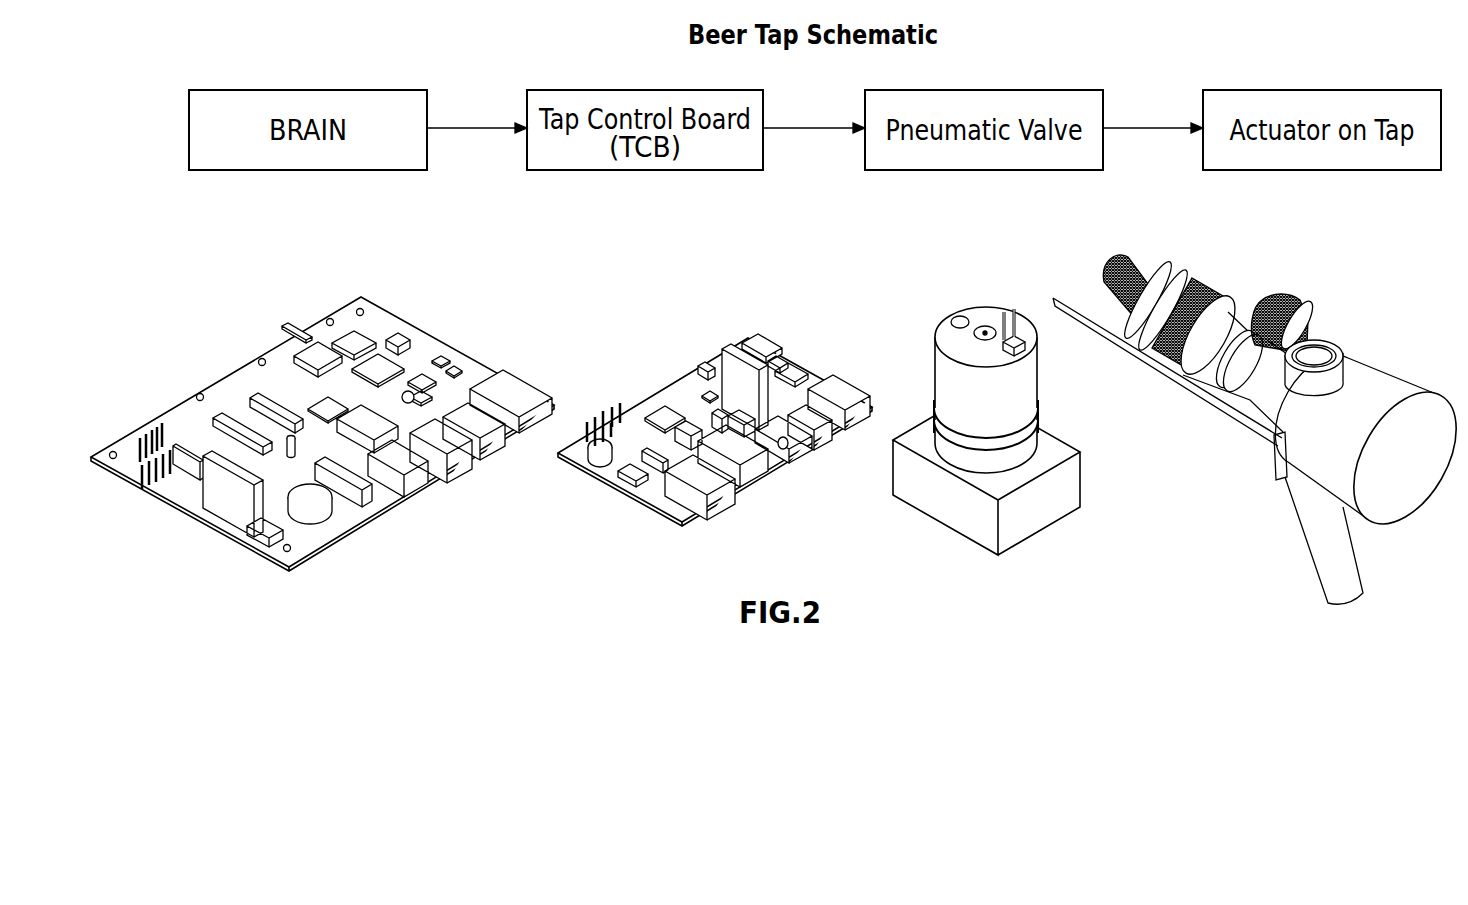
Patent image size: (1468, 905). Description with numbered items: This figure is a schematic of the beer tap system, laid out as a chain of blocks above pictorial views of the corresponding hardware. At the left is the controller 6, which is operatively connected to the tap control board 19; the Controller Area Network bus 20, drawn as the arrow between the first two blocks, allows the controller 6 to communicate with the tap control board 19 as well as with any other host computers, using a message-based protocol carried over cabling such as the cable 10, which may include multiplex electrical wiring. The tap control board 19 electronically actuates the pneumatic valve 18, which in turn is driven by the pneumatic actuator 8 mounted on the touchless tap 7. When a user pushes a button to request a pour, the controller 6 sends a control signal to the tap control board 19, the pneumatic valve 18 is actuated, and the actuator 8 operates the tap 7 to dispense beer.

The controller 6 is at (355, 525).
The tap control board 19 is at (667, 520).
The pneumatic valve 18 is at (913, 490).
The touchless tap 7 is at (1260, 429).
The pneumatic actuator 8 is at (1377, 370).
The cable 10 is at (1187, 377).
The Controller Area Network (CAN bus) 20 is at (465, 127).